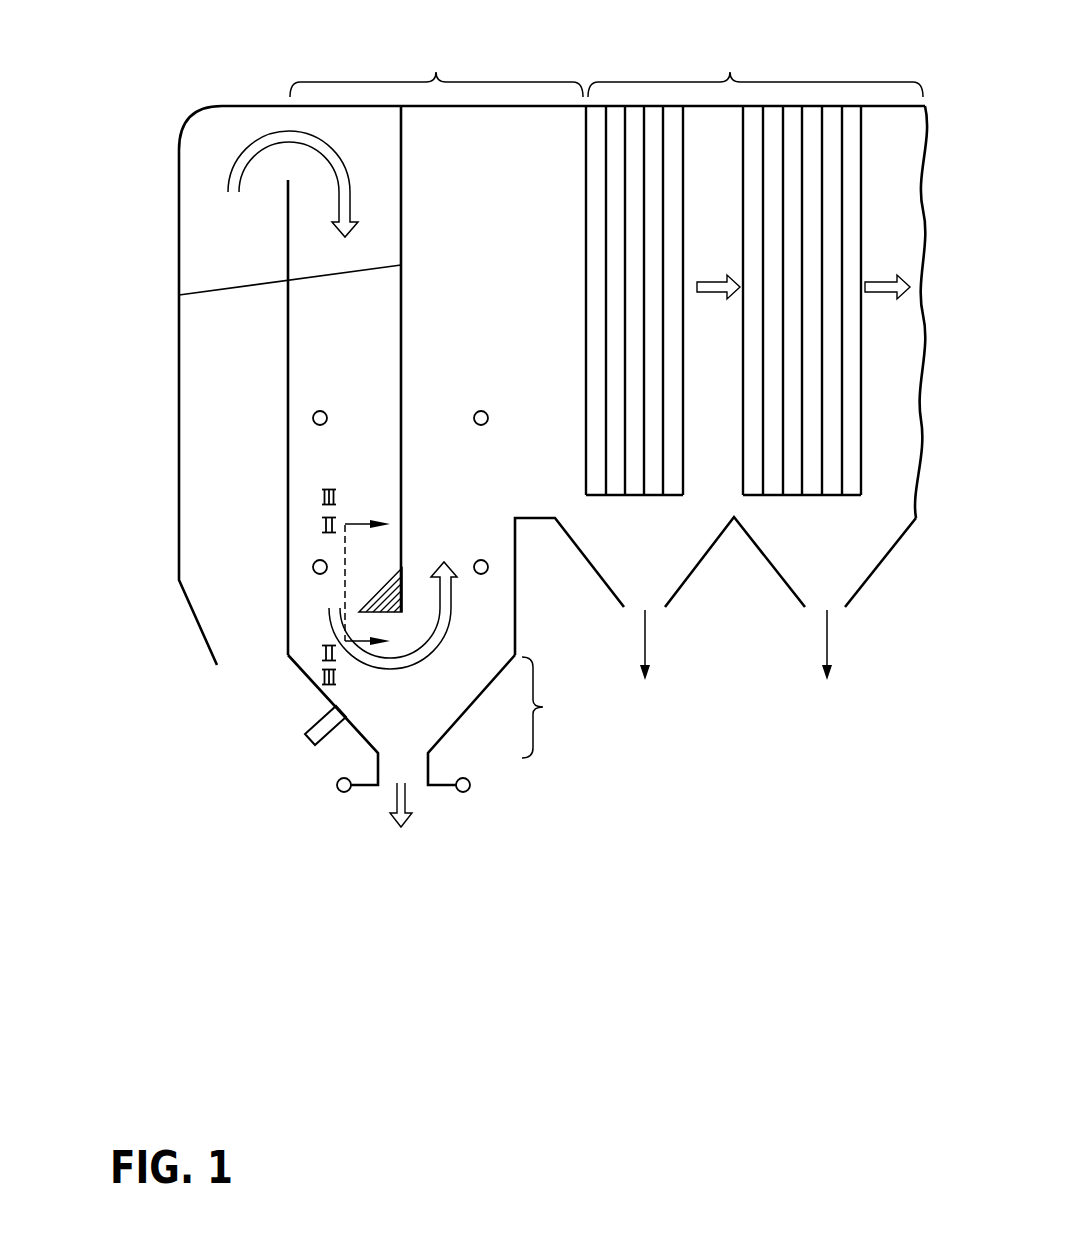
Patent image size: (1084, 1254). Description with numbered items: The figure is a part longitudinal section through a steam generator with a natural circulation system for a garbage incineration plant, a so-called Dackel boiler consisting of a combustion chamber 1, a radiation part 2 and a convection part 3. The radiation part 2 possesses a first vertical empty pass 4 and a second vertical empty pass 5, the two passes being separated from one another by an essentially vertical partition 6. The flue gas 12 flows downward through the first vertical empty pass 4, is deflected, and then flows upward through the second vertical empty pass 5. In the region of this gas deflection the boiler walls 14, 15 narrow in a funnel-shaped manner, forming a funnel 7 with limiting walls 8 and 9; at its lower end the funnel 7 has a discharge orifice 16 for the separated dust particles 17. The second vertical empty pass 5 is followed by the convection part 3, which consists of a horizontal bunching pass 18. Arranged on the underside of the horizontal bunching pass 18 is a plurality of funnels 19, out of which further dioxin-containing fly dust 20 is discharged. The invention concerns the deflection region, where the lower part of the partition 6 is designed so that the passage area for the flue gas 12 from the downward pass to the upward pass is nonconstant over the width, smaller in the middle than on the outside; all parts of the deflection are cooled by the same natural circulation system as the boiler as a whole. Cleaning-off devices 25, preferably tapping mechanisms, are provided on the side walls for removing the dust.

The combustion chamber 1 is at (233, 421).
The radiation part 2 is at (436, 64).
The convection part 3 is at (755, 165).
The first vertical empty pass 4 is at (377, 230).
The second vertical empty pass 5 is at (486, 158).
The partition 6 is at (401, 265).
The funnel 7 is at (548, 707).
The limiting wall 8 is at (477, 790).
The limiting wall 9 is at (335, 705).
The flue gas 12 is at (249, 155).
The boiler wall 14 is at (288, 480).
The boiler wall 15 is at (605, 722).
The discharge orifice 16 is at (418, 772).
The separated dust particles 17 is at (343, 790).
The horizontal bunching pass 18 is at (653, 140).
The funnels 19 is at (702, 563).
The dioxin-containing fly dust 20 is at (763, 768).
The cleaning-off devices 25 is at (313, 422).